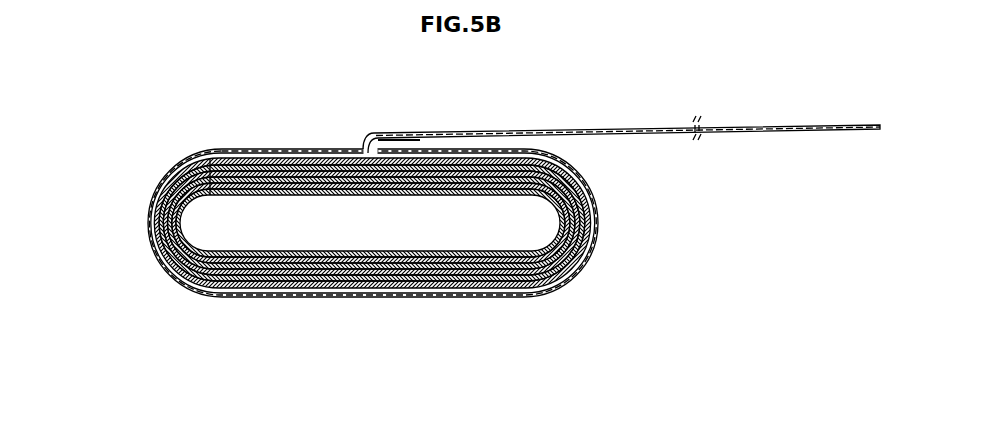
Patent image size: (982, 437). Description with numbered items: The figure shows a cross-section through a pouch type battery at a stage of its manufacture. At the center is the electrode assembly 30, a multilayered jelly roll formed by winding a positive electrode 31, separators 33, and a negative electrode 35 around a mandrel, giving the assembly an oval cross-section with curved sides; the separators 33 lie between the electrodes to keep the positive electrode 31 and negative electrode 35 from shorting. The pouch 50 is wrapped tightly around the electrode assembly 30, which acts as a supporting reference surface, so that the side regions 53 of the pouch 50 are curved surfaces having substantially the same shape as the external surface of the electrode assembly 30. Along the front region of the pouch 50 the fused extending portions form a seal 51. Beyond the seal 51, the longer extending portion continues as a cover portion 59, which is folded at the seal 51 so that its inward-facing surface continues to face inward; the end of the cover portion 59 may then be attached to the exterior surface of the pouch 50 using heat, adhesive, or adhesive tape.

The pouch 50 is at (471, 228).
The seal 51 is at (400, 128).
The side regions 53 is at (150, 224).
The cover portion 59 is at (793, 123).
The electrode assembly 30 is at (372, 285).
The positive electrode 31 is at (395, 291).
The separators 33 is at (440, 291).
The negative electrode 35 is at (400, 375).